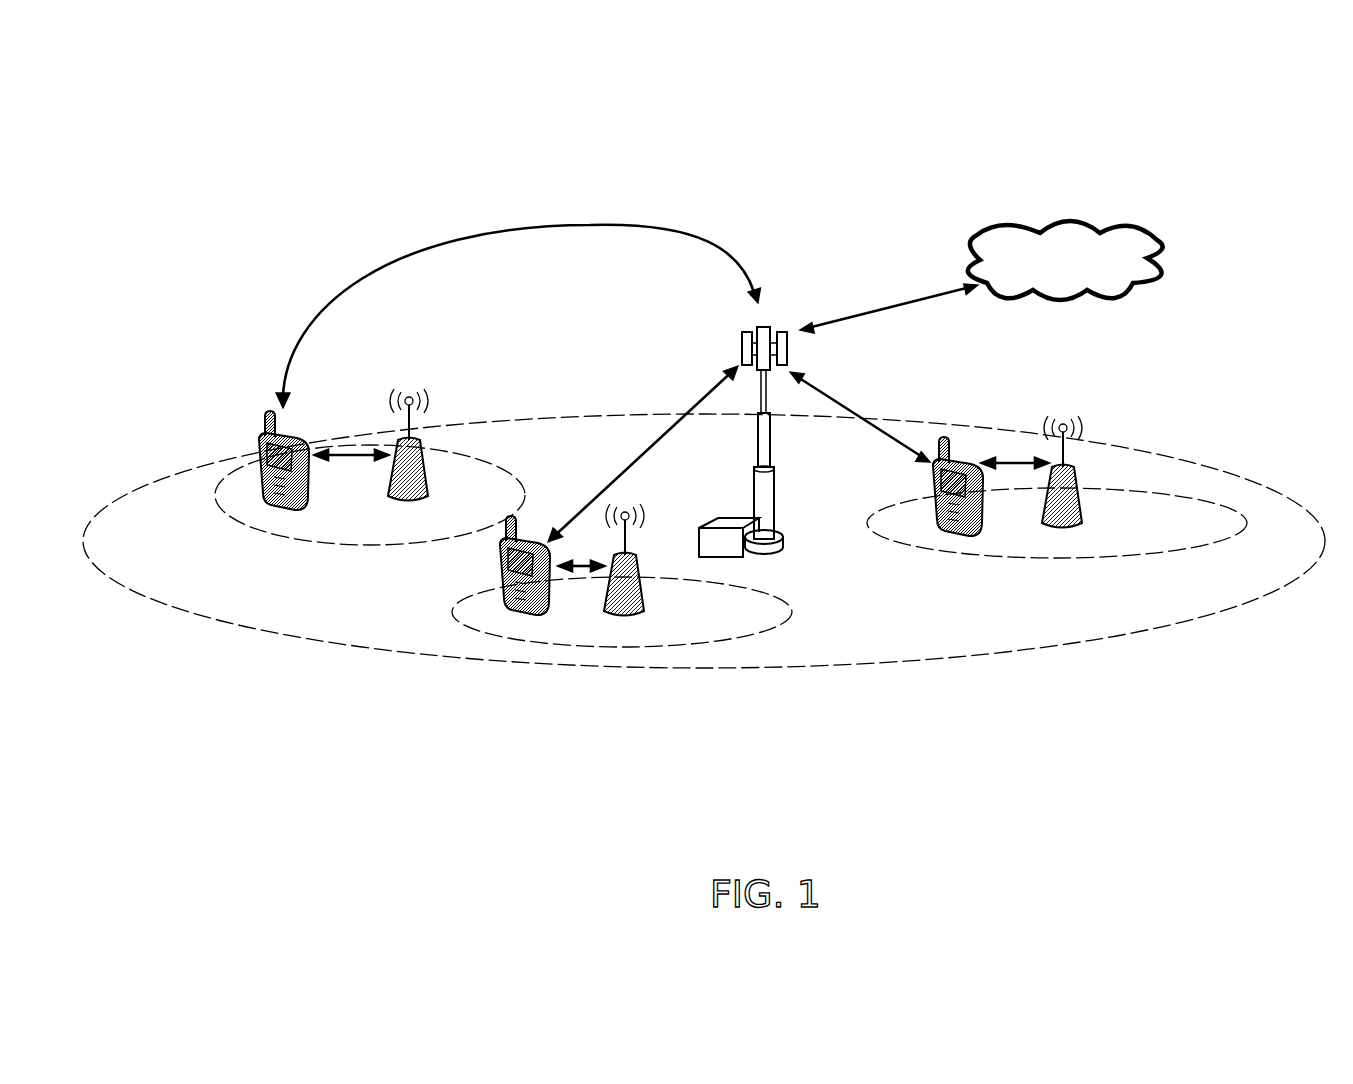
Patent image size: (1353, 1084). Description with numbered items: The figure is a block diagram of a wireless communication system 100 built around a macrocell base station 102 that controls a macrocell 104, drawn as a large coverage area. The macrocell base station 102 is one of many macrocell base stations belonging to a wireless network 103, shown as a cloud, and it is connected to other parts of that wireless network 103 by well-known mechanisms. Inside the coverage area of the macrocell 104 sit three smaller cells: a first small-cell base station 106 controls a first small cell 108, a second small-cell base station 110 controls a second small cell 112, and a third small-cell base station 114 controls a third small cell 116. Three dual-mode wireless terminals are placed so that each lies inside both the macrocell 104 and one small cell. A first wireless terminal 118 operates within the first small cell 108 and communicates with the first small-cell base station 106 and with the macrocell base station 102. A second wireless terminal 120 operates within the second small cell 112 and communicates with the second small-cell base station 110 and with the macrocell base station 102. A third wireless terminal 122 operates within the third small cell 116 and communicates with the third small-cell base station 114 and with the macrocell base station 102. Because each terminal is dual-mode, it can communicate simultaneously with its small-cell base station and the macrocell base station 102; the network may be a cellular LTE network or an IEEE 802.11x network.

The wireless communication system 100 is at (286, 721).
The macrocell base station 102 is at (797, 328).
The wireless network 103 is at (1059, 217).
The macrocell 104 is at (622, 412).
The first small-cell base station 106 is at (1085, 478).
The first small cell 108 is at (1140, 557).
The second small-cell base station 110 is at (648, 575).
The second small cell 112 is at (598, 650).
The third small-cell base station 114 is at (428, 453).
The third small cell 116 is at (517, 472).
The first wireless terminal 118 is at (960, 460).
The second wireless terminal 120 is at (523, 533).
The third wireless terminal 122 is at (323, 412).